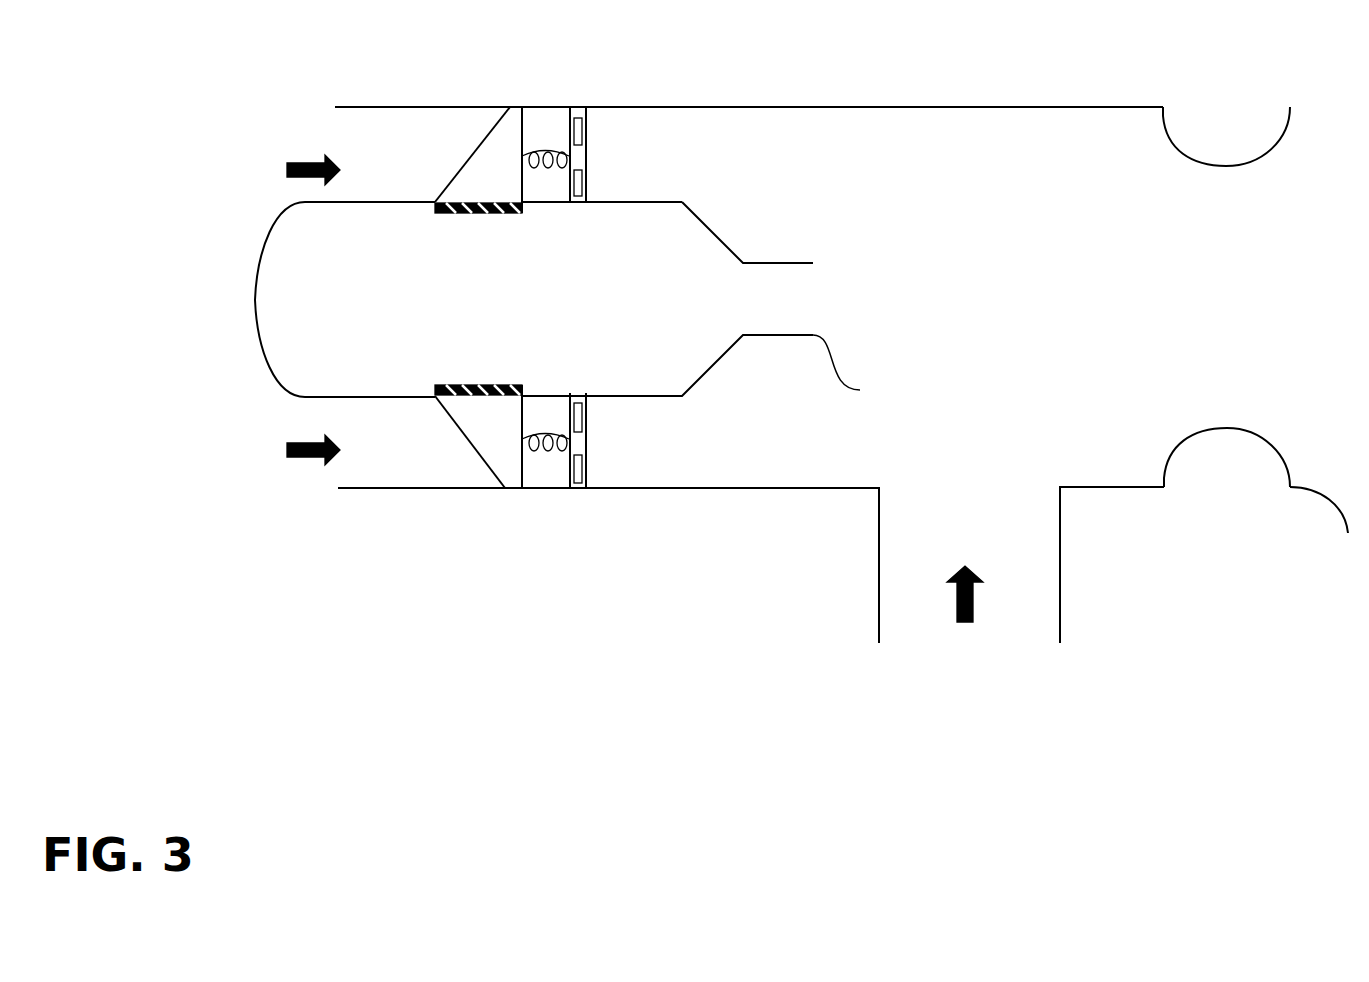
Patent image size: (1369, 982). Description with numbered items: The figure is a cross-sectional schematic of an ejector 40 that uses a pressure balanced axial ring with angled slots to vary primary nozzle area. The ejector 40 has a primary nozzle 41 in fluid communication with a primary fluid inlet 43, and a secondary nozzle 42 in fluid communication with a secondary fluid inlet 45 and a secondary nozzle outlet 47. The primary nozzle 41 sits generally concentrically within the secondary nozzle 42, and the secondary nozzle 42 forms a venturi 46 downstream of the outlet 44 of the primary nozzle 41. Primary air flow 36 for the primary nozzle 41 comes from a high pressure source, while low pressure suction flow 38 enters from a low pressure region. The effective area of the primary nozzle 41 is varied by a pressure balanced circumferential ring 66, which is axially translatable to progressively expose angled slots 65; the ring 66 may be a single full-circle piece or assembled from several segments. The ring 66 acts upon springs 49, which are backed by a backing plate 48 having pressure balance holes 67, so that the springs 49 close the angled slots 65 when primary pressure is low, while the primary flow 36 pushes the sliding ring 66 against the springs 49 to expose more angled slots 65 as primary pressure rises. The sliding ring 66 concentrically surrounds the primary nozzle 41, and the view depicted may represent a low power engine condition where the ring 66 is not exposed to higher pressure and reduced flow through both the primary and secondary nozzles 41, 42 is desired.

The primary air flow 36 is at (296, 310).
The suction flow 38 is at (965, 611).
The ejector 40 is at (808, 93).
The primary nozzle 41 is at (748, 262).
The secondary nozzle 42 is at (1088, 106).
The primary fluid inlet 43 is at (356, 490).
The outlet of the primary nozzle 44 is at (709, 370).
The secondary fluid inlet 45 is at (1062, 585).
The venturi 46 is at (1214, 430).
The secondary nozzle outlet 47 is at (1325, 526).
The backing plate 48 is at (587, 443).
The springs 49 is at (549, 461).
The angled slots 65 is at (487, 222).
The pressure balanced circumferential ring 66 is at (523, 136).
The pressure balance holes 67 is at (585, 180).